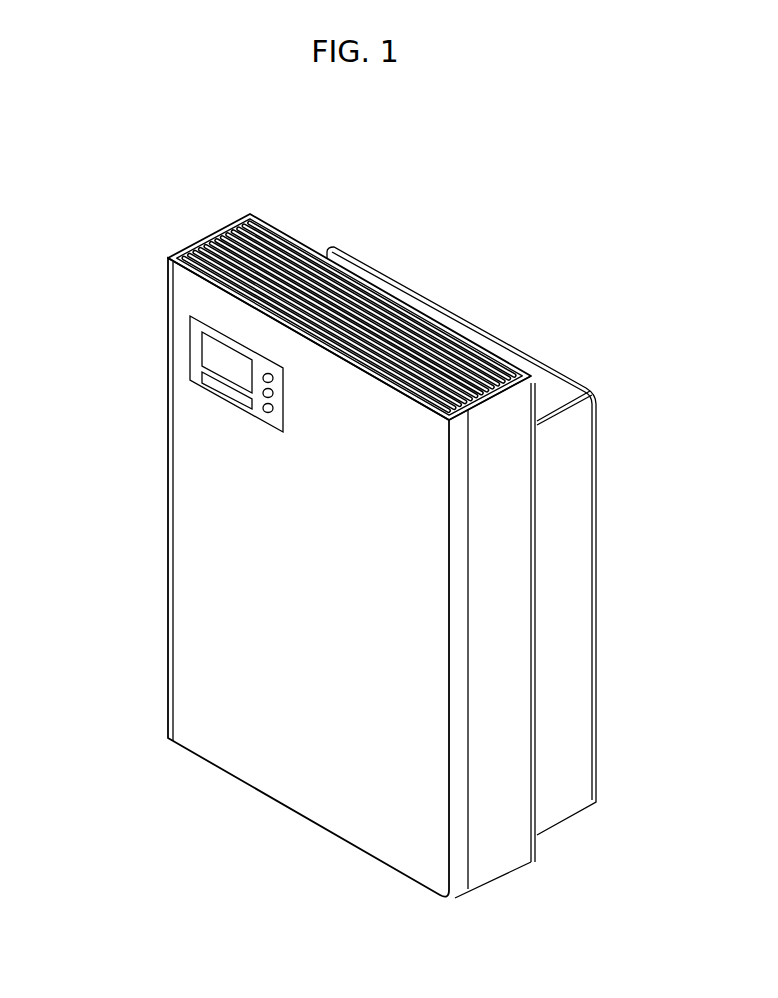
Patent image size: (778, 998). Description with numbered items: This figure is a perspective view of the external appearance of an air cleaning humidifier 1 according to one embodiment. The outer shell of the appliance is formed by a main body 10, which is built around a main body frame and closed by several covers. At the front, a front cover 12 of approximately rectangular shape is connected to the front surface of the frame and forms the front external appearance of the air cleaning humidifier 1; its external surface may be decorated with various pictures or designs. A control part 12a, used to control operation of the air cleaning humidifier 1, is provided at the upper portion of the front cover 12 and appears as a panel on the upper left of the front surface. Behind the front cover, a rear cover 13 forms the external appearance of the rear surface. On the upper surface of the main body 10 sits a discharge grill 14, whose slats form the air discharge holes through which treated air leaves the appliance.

The air cleaning humidifier 1 is at (103, 237).
The main body 10 is at (497, 845).
The front cover 12 is at (295, 783).
The control part 12a is at (208, 348).
The rear cover 13 is at (568, 682).
The discharge grill 14 is at (283, 237).